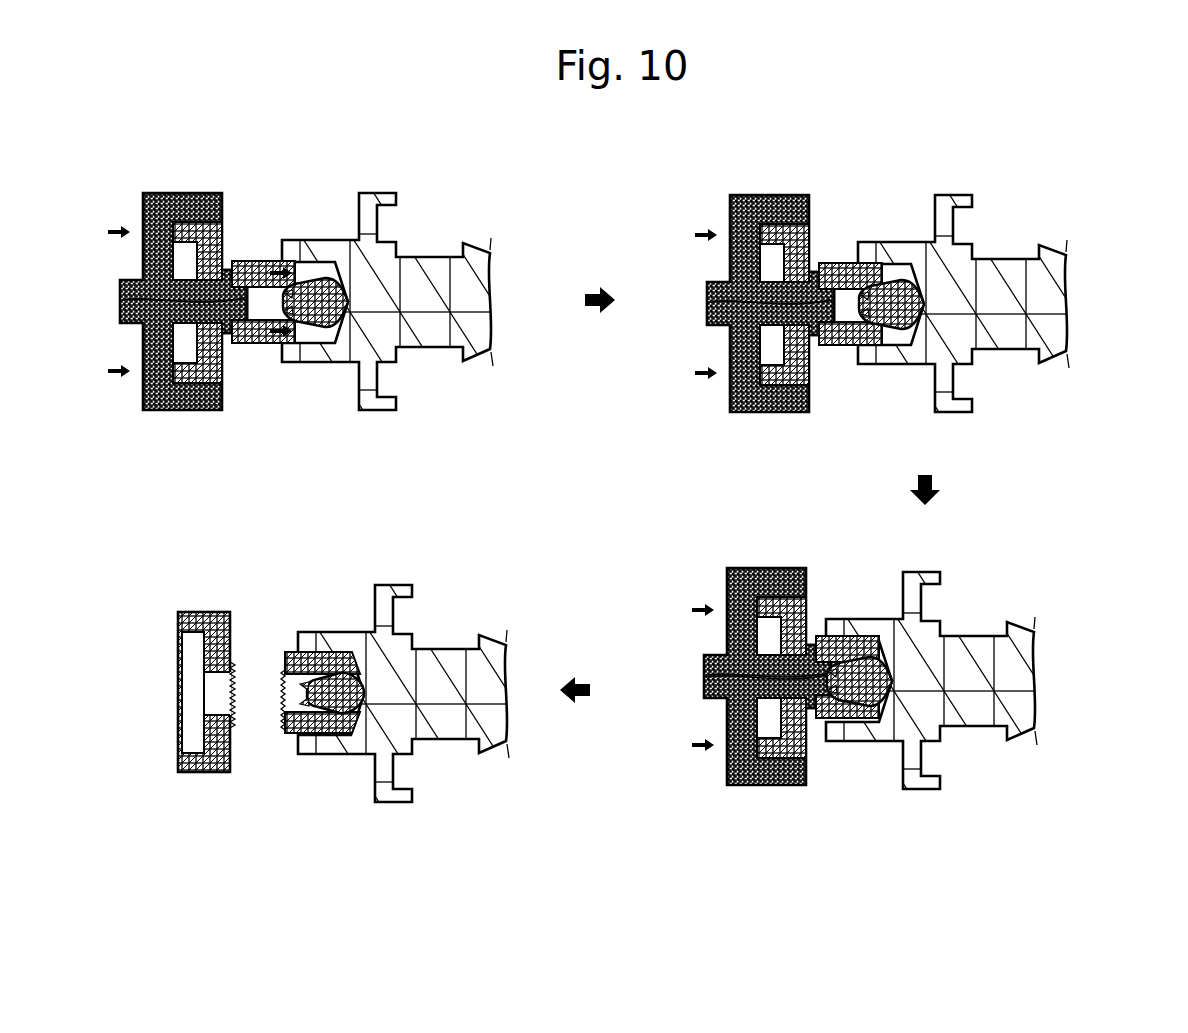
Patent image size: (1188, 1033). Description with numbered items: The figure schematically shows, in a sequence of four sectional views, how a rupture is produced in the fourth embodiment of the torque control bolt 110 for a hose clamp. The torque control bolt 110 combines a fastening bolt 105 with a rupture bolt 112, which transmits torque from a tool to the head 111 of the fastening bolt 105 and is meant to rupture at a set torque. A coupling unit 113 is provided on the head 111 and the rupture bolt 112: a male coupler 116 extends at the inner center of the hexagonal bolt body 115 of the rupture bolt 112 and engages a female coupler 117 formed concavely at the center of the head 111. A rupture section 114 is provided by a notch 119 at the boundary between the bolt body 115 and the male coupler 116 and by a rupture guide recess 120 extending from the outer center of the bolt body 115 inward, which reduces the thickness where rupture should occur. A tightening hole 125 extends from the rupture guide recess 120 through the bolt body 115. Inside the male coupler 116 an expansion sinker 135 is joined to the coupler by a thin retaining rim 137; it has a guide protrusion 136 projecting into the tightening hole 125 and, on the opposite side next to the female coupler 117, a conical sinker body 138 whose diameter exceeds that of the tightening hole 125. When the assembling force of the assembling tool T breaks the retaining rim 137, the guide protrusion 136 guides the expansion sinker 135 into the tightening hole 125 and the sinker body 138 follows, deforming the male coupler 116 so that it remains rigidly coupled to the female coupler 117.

The fastening bolt 105 is at (495, 338).
The torque control bolt 110 is at (722, 480).
The head 111 is at (340, 250).
The rupture bolt 112 is at (195, 386).
The coupling unit 113 is at (572, 429).
The rupture section 114 is at (560, 570).
The bolt body 115 is at (205, 222).
The male coupler 116 is at (248, 262).
The female coupler 117 is at (310, 276).
The notch 119 is at (226, 336).
The rupture guide recess 120 is at (258, 322).
The tightening hole 125 is at (135, 296).
The expansion sinker 135 is at (636, 532).
The guide protrusion 136 is at (287, 347).
The retaining rim 137 is at (314, 322).
The sinker body 138 is at (352, 325).
The assembling tool T is at (153, 412).